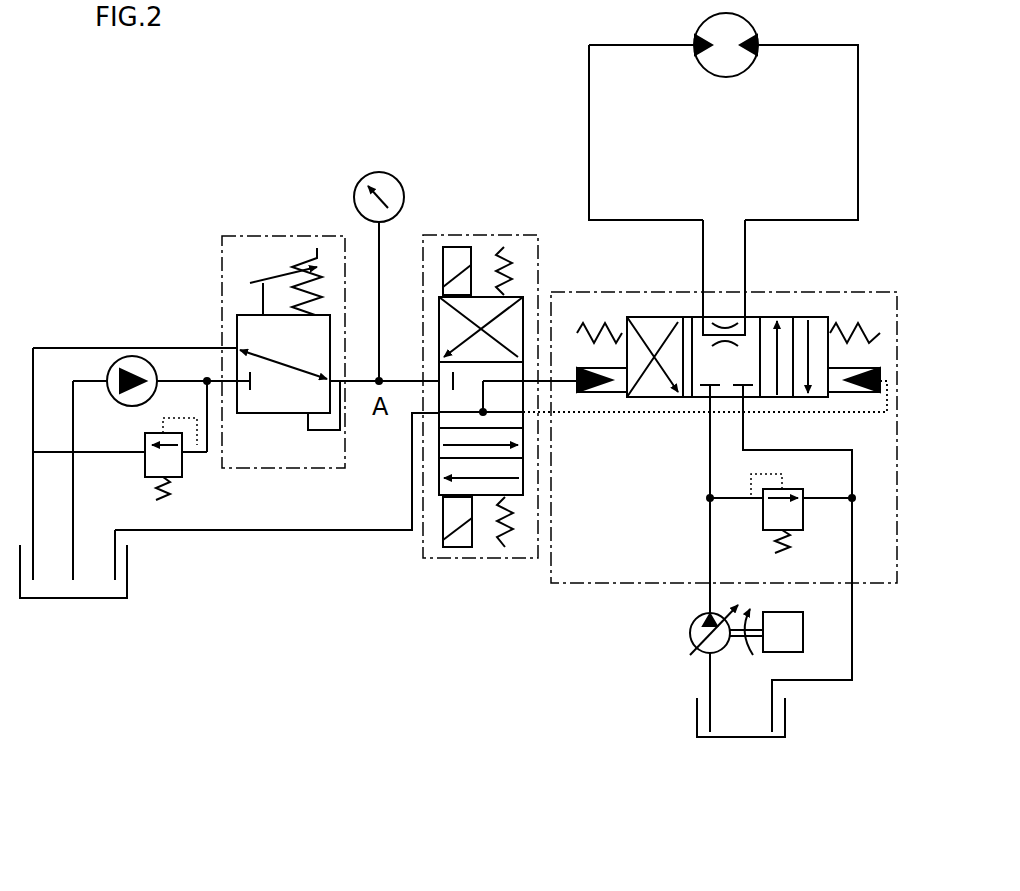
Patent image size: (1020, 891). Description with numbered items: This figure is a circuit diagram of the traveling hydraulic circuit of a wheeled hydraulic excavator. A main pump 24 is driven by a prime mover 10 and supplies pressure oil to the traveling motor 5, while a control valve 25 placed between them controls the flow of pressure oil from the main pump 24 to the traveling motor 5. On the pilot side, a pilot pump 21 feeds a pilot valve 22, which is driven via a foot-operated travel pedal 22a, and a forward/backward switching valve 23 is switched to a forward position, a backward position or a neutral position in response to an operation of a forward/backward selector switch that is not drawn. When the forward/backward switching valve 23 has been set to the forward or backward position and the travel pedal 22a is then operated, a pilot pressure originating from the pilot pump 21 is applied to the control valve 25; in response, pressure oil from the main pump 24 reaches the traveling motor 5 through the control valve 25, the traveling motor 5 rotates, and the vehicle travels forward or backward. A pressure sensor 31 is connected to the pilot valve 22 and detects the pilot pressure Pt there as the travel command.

The traveling motor 5 is at (752, 25).
The prime mover 10 is at (793, 652).
The pilot pump 21 is at (152, 365).
The pilot valve 22 is at (283, 316).
The travel pedal 22a is at (280, 267).
The forward/backward switching valve 23 is at (448, 235).
The main pump 24 is at (690, 623).
The control valve 25 is at (680, 291).
The pressure sensor 31 is at (403, 183).